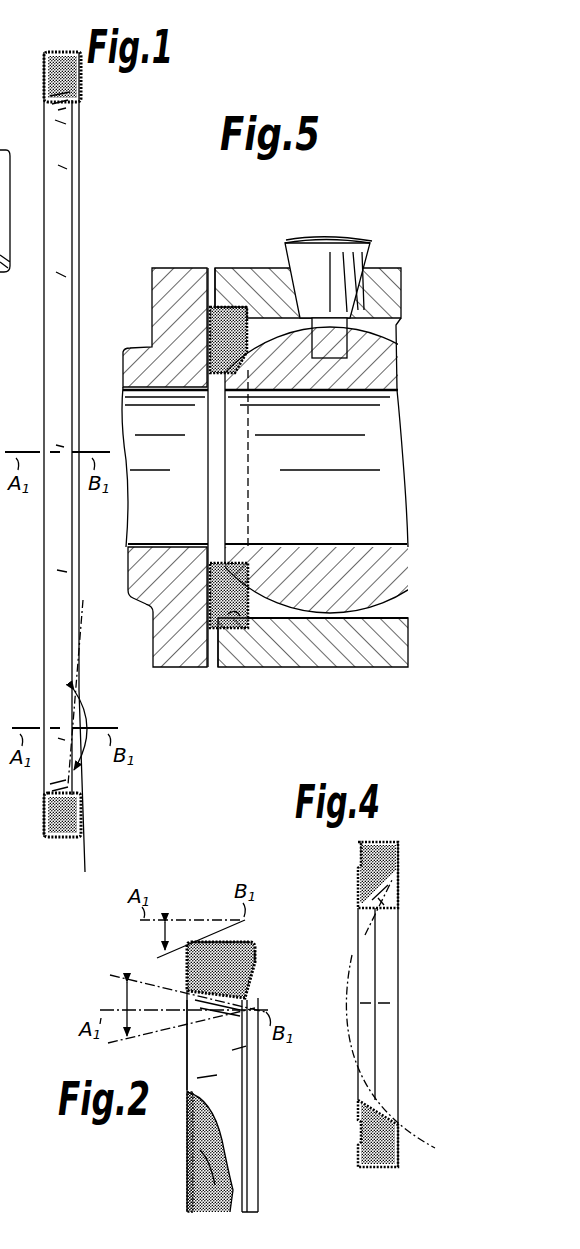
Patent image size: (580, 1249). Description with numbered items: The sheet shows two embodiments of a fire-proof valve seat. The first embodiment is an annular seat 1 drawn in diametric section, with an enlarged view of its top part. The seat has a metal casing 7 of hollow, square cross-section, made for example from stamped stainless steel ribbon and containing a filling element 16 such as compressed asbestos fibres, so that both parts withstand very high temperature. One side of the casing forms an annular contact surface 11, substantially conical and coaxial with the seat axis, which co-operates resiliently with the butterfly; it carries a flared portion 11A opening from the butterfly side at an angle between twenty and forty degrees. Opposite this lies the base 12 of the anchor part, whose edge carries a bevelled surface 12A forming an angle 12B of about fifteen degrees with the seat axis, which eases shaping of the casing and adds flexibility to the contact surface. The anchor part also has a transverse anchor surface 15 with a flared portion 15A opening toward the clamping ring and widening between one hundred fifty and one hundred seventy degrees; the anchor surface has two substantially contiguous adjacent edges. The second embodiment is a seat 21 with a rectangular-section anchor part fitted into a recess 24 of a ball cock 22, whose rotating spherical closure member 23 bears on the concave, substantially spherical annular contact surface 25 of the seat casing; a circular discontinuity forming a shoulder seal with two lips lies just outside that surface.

In FIG. 1, the annular seat 1 is at (90, 166).
In FIG. 2, the annular seat 1 is at (263, 1136).
In FIG. 1, the metal casing 7 is at (46, 70).
In FIG. 2, the metal casing 7 is at (187, 1138).
In FIG. 1, the annular contact surface 11 is at (50, 100).
In FIG. 2, the annular contact surface 11 is at (203, 1060).
In FIG. 2, the flared portion 11A is at (122, 1002).
In FIG. 1, the base 12 is at (60, 49).
In FIG. 2, the base 12 is at (246, 941).
In FIG. 2, the bevelled surface 12A is at (192, 940).
In FIG. 2, the angle 12B is at (163, 936).
In FIG. 1, the transverse anchor surface 15 is at (80, 817).
In FIG. 2, the transverse anchor surface 15 is at (256, 963).
In FIG. 1, the flared portion 15A is at (94, 703).
In FIG. 1, the filling element 16 is at (48, 821).
In FIG. 2, the filling element 16 is at (208, 1185).
In FIG. 5, the seat 21 is at (214, 556).
In FIG. 4, the seat 21 is at (398, 868).
In FIG. 5, the ball cock 22 is at (233, 256).
In FIG. 5, the closure member 23 is at (292, 546).
In FIG. 4, the closure member 23 is at (428, 867).
In FIG. 5, the recess 24 is at (233, 622).
In FIG. 4, the annular contact surface 25 is at (384, 900).